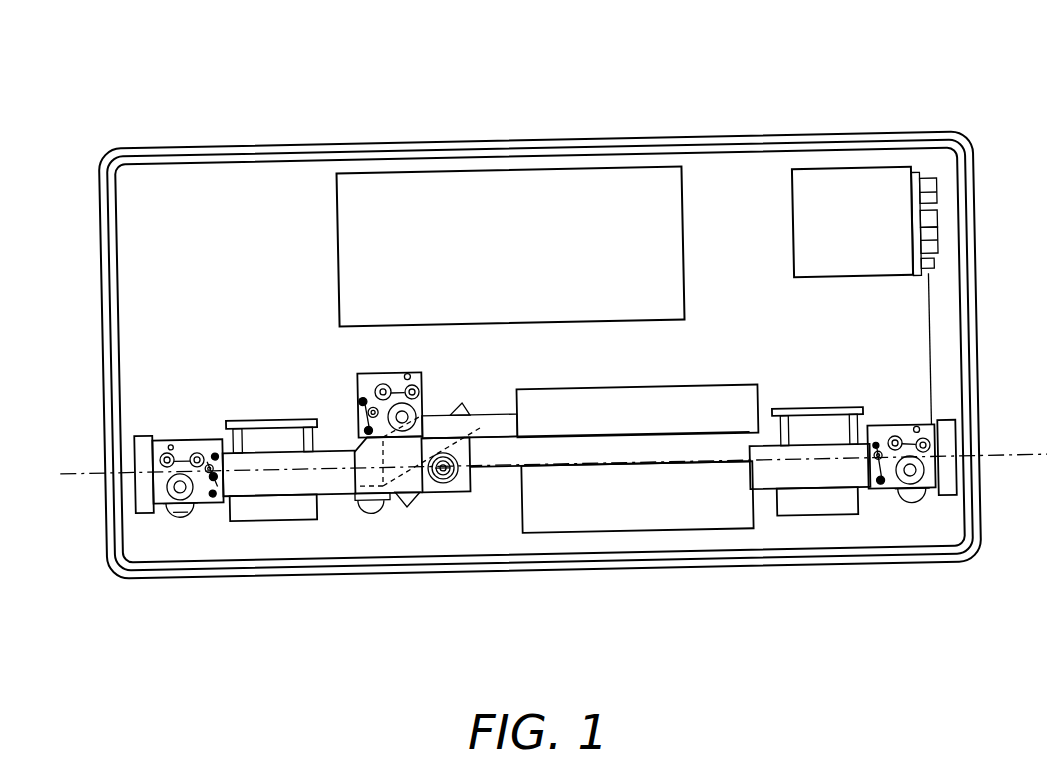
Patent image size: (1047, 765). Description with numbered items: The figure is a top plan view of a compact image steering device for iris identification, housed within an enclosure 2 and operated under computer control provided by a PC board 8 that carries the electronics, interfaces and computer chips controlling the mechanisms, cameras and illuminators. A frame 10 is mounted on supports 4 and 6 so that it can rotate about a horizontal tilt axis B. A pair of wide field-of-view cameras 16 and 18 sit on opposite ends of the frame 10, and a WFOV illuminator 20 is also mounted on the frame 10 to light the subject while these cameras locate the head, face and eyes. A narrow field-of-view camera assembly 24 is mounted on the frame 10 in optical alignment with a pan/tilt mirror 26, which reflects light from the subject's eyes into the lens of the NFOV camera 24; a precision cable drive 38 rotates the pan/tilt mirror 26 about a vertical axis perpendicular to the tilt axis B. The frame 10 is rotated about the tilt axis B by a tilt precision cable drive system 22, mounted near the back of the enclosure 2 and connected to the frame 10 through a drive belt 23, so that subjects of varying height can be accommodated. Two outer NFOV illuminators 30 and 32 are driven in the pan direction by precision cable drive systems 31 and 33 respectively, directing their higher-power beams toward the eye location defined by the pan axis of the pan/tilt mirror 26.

The enclosure 2 is at (618, 135).
The support 4 is at (140, 445).
The support 6 is at (945, 420).
The PC board 8 is at (390, 170).
The frame 10 is at (363, 450).
The wide field-of-view camera 16 is at (253, 420).
The wide field-of-view camera 18 is at (823, 408).
The WFOV illuminator 20 is at (373, 512).
The tilt precision cable drive system 22 is at (865, 222).
The drive belt 23 is at (932, 293).
The narrow field-of-view camera assembly 24 is at (657, 500).
The pan/tilt mirror 26 is at (466, 408).
The NFOV illuminator 30 is at (178, 512).
The precision cable drive system 31 is at (195, 440).
The NFOV illuminator 32 is at (913, 503).
The precision cable drive system 33 is at (900, 425).
The precision cable drive 38 is at (388, 373).
The tilt axis B is at (996, 457).